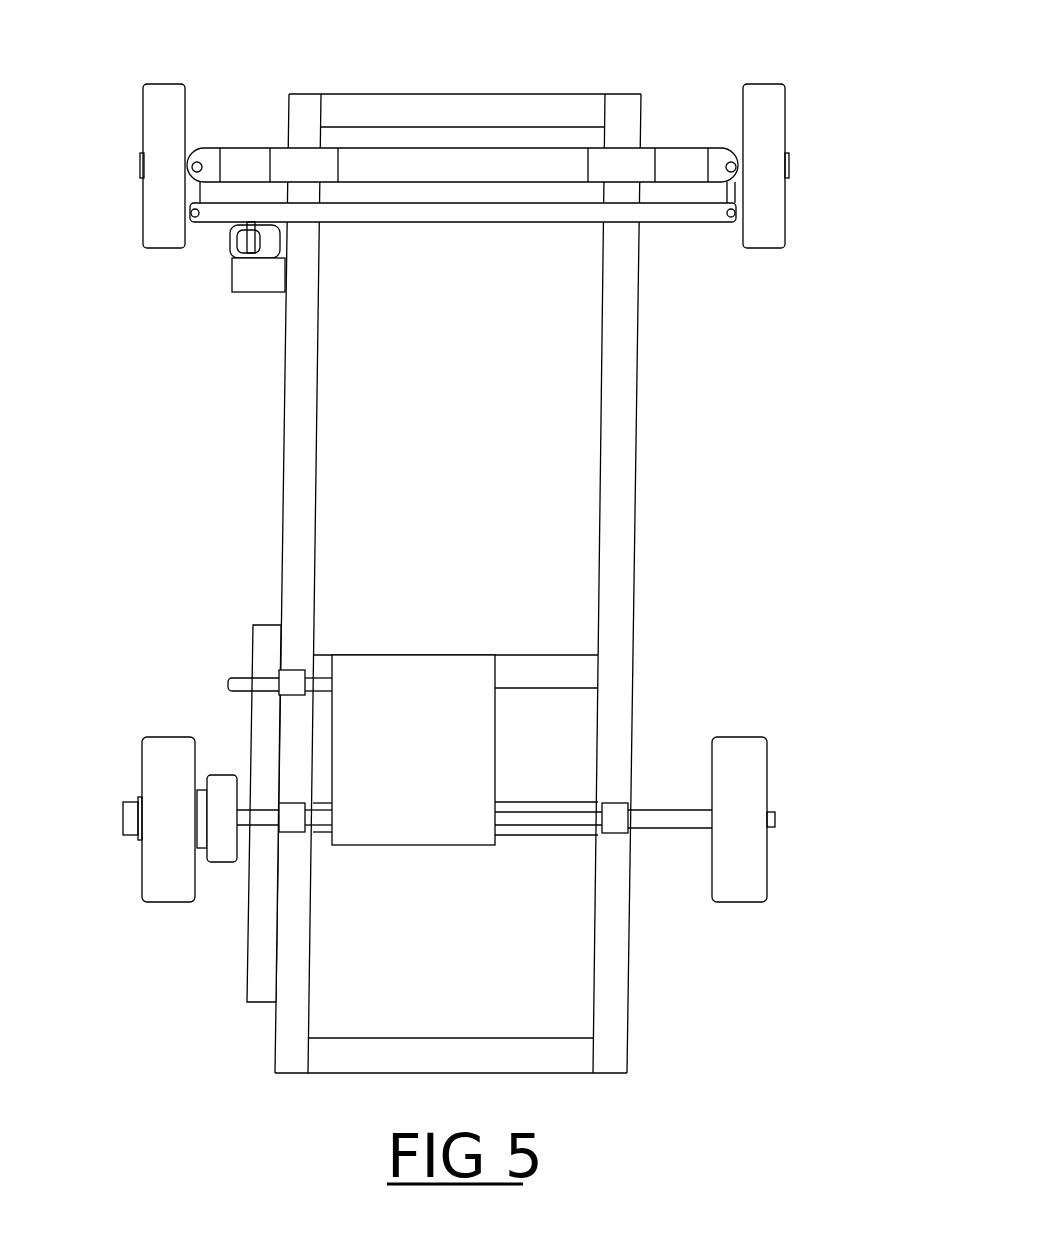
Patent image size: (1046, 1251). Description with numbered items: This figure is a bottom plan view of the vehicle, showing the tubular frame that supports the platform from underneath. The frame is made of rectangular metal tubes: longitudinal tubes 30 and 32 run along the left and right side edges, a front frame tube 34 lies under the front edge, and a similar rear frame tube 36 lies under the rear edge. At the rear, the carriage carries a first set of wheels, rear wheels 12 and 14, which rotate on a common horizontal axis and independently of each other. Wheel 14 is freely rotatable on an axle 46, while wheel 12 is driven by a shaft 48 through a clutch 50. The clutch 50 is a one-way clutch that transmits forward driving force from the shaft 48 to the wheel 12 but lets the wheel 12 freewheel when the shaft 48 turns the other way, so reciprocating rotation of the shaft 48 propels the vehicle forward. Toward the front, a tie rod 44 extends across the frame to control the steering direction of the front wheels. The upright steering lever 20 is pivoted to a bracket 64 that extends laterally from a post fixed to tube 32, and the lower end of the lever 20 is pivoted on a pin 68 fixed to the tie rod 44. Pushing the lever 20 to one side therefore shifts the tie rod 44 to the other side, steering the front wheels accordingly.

The rear wheel 12 is at (150, 765).
The rear wheel 14 is at (752, 777).
The steering lever 20 is at (268, 296).
The longitudinal tube 30 is at (623, 445).
The longitudinal tube 32 is at (288, 532).
The front frame tube 34 is at (418, 105).
The rear frame tube 36 is at (520, 1062).
The tie rod 44 is at (500, 213).
The axle 46 is at (660, 822).
The shaft 48 is at (263, 820).
The clutch 50 is at (230, 783).
The bracket 64 is at (252, 293).
The pin 68 is at (248, 238).